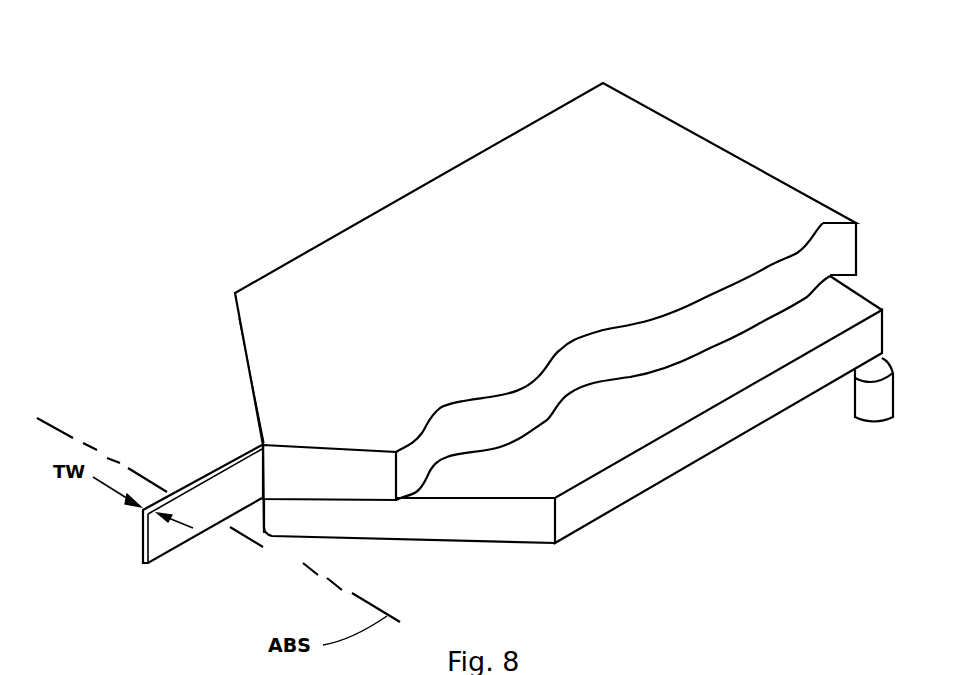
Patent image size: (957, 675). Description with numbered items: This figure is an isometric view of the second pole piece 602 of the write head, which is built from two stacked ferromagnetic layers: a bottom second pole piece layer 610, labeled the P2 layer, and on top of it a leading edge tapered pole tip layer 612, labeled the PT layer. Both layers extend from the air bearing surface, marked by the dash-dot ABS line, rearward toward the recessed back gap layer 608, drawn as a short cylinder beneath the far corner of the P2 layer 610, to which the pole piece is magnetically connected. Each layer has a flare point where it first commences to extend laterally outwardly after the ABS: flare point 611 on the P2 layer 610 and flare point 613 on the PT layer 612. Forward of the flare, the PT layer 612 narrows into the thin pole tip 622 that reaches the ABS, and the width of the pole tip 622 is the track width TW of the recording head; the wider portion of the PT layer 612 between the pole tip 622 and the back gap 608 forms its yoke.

The second pole piece 602 is at (675, 92).
The back gap layer 608 is at (843, 398).
The bottom second pole piece (P2) layer 610 is at (608, 439).
The flare point 611 is at (264, 535).
The pole tip (PT) layer 612 is at (560, 277).
The flare point 613 is at (255, 437).
The pole tip 622 is at (217, 467).